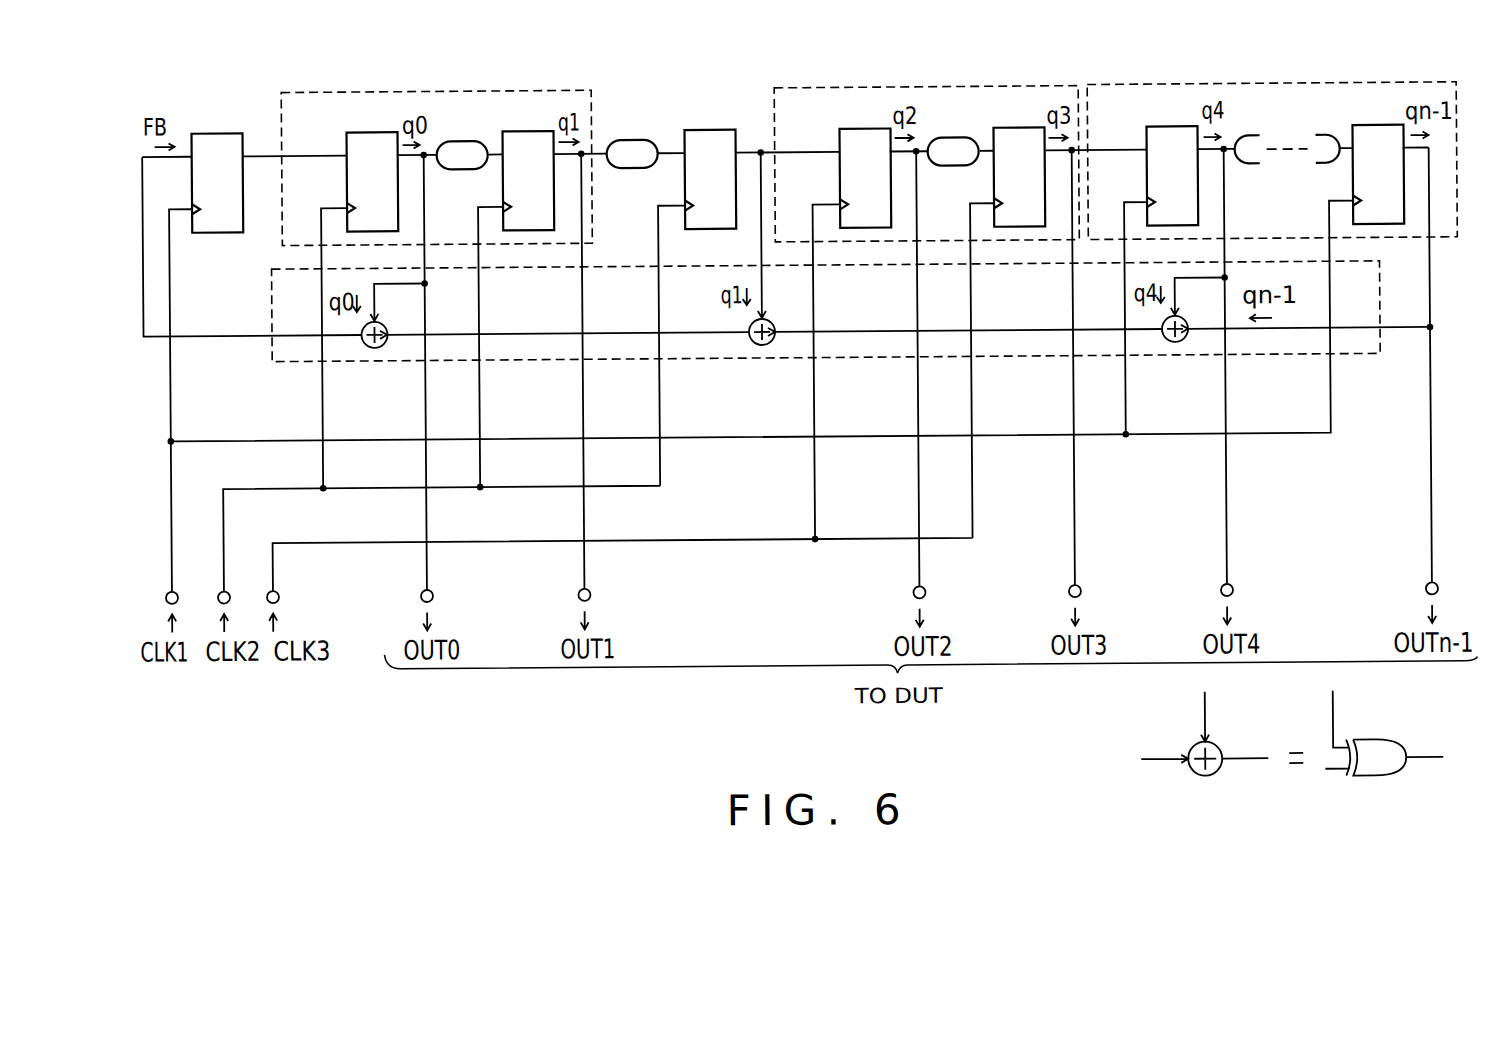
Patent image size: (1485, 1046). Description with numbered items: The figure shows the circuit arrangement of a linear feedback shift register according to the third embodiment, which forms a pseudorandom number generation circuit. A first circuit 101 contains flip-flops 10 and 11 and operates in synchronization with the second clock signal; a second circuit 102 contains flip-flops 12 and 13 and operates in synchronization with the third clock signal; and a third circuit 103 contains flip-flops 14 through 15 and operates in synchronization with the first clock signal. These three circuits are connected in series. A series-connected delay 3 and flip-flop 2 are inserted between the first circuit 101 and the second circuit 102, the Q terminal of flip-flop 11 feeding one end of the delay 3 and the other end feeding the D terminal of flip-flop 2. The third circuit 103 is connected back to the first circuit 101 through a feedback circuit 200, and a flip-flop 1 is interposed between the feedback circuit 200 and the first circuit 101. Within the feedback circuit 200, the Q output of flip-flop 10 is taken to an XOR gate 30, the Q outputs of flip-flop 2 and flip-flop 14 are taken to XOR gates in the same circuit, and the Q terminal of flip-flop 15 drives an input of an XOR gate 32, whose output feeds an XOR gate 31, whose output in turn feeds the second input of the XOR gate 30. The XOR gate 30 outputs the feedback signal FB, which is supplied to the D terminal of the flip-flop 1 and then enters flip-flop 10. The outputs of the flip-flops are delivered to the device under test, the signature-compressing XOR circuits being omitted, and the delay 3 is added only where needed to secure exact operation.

The flip-flop 1 is at (220, 130).
The flip-flop 2 is at (714, 130).
The delay 3 is at (464, 139).
The flip-flop 10 is at (369, 130).
The flip-flop 11 is at (531, 130).
The flip-flop 12 is at (865, 130).
The flip-flop 13 is at (1018, 130).
The flip-flop 14 is at (1171, 130).
The flip-flop 15 is at (1374, 130).
The XOR gate 30 is at (384, 322).
The XOR gate 31 is at (771, 321).
The XOR gate 32 is at (1184, 321).
The first circuit 101 is at (410, 88).
The second circuit 102 is at (906, 87).
The third circuit 103 is at (1230, 86).
The feedback circuit 200 is at (700, 360).